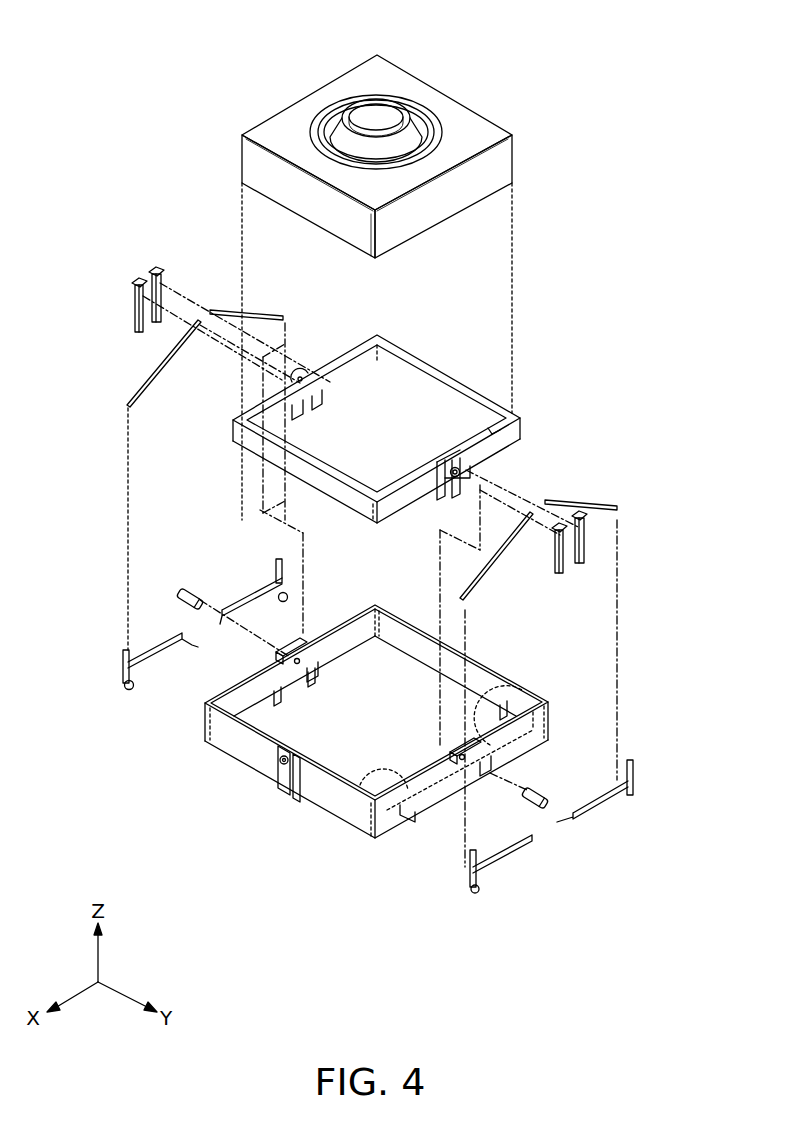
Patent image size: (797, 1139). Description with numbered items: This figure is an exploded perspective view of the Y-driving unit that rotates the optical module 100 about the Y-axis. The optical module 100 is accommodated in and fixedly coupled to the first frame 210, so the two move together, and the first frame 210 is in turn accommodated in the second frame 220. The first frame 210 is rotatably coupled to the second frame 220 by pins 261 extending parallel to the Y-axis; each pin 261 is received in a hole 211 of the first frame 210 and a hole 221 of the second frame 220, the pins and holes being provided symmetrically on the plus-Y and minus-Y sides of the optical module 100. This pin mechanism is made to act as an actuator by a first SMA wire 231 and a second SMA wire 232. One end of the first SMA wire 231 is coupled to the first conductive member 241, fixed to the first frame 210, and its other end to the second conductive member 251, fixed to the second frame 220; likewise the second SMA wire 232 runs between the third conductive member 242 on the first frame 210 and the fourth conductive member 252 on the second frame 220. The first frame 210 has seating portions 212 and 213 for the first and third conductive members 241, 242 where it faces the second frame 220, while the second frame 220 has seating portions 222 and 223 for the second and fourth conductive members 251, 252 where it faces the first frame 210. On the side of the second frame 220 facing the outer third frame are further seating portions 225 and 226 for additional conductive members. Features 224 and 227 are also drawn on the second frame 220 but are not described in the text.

The optical module 100 is at (458, 85).
The first frame 210 is at (438, 385).
The hole 211 is at (302, 372).
The seating portion 212 is at (492, 430).
The seating portion 213 is at (468, 472).
The second frame 220 is at (505, 688).
The hole 221 is at (298, 662).
The seating portion 222 is at (343, 655).
The seating portion 223 is at (270, 702).
The hinge pin 224 is at (284, 780).
The seating portion 225 is at (275, 776).
The seating portion 226 is at (291, 795).
The opening 227 is at (367, 728).
The first SMA wire 231 is at (230, 311).
The second SMA wire 232 is at (148, 385).
The first conductive member 241 is at (154, 268).
The third conductive member 242 is at (133, 282).
The second conductive member 251 is at (257, 593).
The fourth conductive member 252 is at (155, 648).
The pin 261 is at (186, 590).